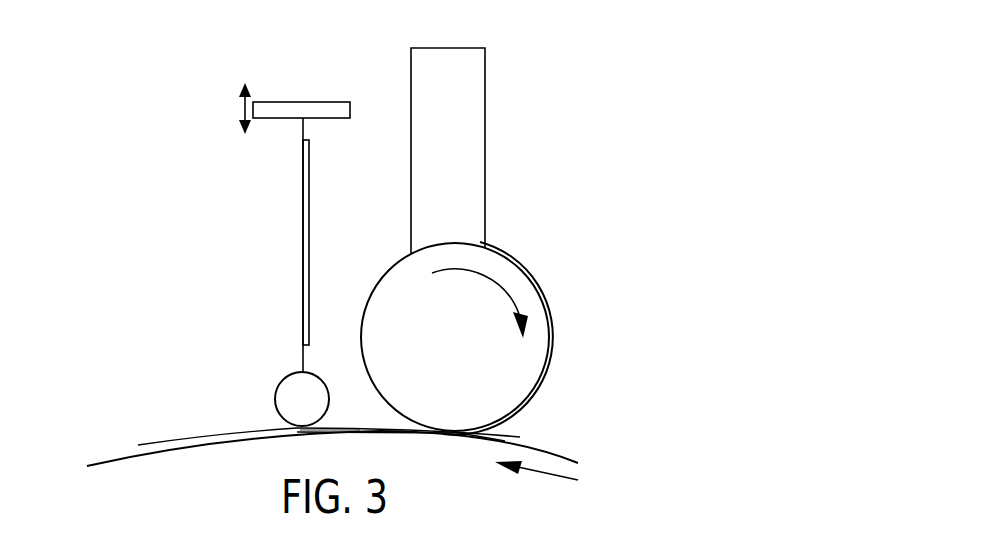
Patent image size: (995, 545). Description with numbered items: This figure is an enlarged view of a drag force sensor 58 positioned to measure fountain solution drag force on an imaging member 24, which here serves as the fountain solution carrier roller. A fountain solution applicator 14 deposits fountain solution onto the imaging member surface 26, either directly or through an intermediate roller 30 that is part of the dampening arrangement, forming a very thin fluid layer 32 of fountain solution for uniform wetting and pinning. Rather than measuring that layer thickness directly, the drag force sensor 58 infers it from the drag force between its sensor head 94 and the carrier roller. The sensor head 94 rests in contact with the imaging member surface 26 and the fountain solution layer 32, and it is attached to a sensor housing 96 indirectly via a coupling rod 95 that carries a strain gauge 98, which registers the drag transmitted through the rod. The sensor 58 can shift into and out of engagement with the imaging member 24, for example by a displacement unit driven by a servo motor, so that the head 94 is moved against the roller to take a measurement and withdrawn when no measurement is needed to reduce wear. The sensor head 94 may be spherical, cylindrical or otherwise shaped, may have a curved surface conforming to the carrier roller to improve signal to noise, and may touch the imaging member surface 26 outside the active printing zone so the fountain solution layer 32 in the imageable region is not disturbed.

The fountain solution applicator 14 is at (618, 94).
The imaging member 24 is at (148, 442).
The imaging member surface 26 is at (552, 452).
The intermediate roller 30 is at (362, 340).
The fountain solution layer 32 is at (357, 427).
The drag force sensor 58 is at (232, 212).
The sensor head 94 is at (280, 378).
The coupling rod 95 is at (305, 127).
The sensor housing 96 is at (293, 102).
The strain gauge 98 is at (305, 245).